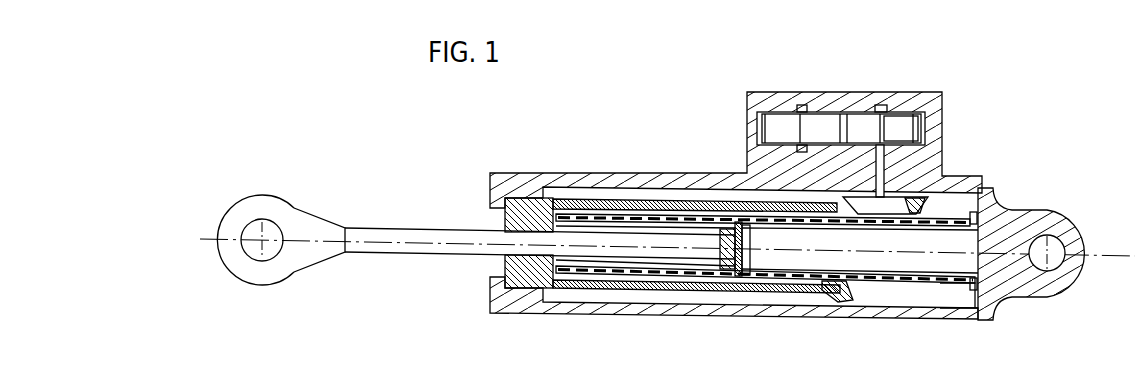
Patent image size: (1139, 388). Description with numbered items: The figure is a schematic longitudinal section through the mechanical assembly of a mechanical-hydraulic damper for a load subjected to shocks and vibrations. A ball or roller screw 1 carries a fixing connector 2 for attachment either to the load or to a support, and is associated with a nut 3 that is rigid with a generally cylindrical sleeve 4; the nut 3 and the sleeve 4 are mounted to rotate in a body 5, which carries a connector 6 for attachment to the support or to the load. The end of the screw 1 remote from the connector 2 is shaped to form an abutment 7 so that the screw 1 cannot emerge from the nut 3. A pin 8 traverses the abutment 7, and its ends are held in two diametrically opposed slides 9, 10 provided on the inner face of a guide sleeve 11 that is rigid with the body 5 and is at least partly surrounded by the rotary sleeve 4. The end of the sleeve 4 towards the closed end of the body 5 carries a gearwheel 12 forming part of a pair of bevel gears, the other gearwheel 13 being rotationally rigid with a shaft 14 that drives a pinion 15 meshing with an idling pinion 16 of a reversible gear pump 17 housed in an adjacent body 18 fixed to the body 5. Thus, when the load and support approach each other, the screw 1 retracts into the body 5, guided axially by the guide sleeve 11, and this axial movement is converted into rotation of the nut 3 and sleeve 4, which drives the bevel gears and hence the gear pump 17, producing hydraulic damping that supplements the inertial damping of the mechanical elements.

The ball or roller screw 1 is at (373, 232).
The fixing connector 2 is at (268, 268).
The nut 3 is at (538, 212).
The cylindrical sleeve 4 is at (684, 199).
The body 5 is at (604, 174).
The connector 6 is at (1048, 285).
The abutment 7 is at (750, 240).
The pin 8 is at (737, 268).
The slide 9 is at (877, 226).
The slide 10 is at (913, 283).
The guide sleeve 11 is at (945, 283).
The gearwheel 12 is at (845, 300).
The gearwheel 13 is at (925, 202).
The shaft 14 is at (945, 165).
The pinion 15 is at (892, 128).
The idling pinion 16 is at (787, 130).
The gear pump 17 is at (740, 119).
The adjacent body 18 is at (837, 104).